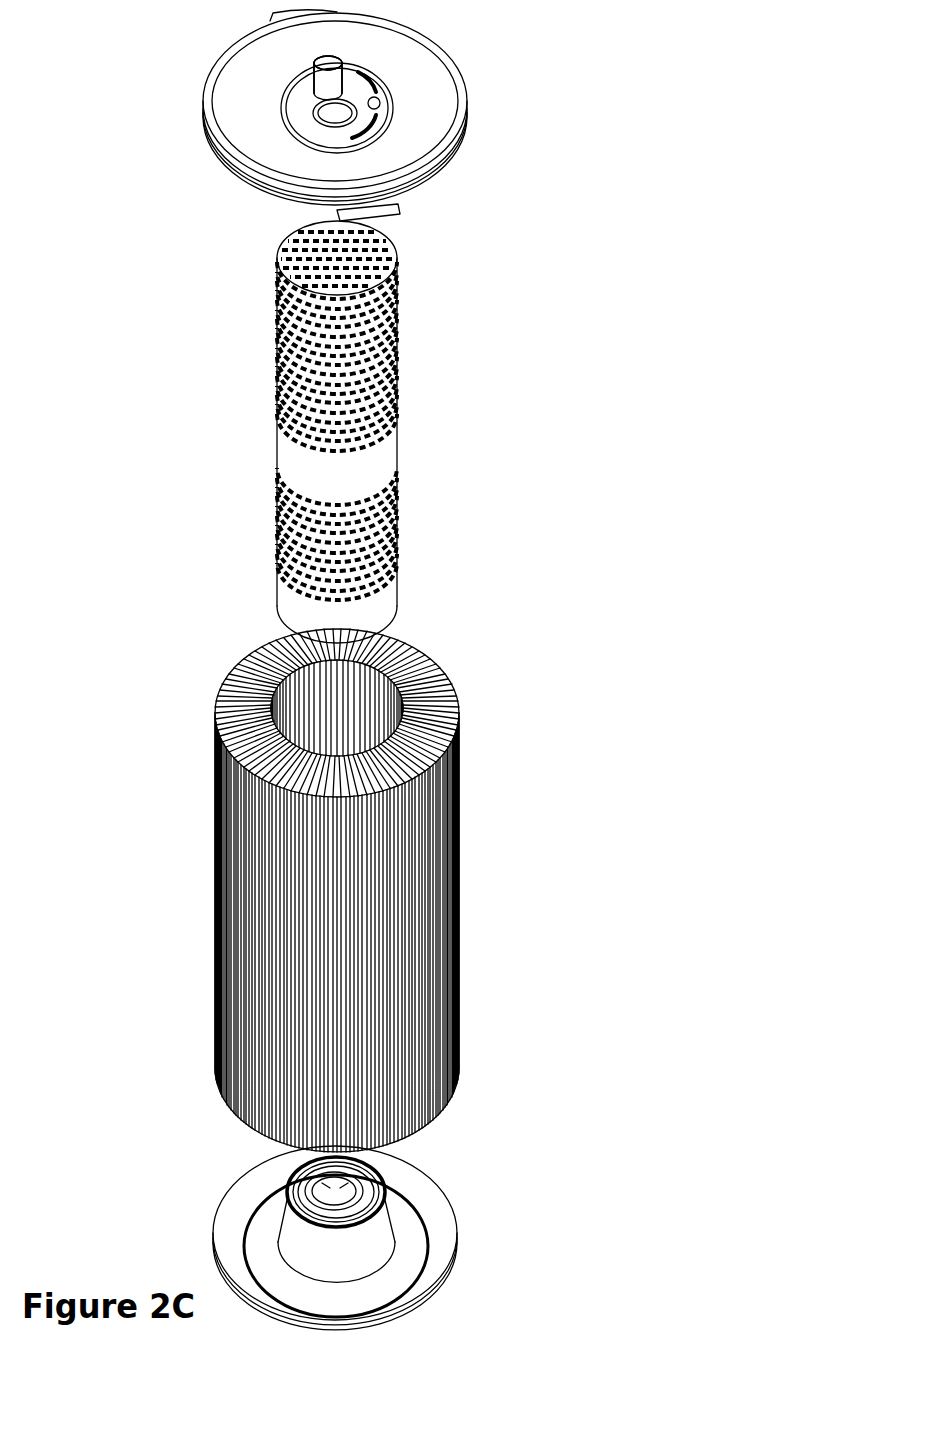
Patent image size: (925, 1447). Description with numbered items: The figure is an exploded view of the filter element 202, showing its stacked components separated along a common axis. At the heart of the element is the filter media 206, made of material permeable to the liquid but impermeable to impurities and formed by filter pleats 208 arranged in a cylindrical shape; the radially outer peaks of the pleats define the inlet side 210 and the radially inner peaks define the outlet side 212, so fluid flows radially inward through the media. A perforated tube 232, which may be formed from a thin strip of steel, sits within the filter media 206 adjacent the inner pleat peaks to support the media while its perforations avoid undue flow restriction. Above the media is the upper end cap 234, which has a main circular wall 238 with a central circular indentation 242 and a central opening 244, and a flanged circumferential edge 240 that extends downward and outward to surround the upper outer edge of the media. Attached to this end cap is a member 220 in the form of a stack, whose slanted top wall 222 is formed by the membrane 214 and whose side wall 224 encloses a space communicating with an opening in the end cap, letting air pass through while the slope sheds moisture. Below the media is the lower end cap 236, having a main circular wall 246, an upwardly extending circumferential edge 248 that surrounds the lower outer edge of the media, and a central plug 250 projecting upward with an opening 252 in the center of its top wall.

The filter element 202 is at (417, 432).
The filter media 206 is at (327, 872).
The filter pleats 208 is at (443, 664).
The inlet side 210 is at (247, 900).
The outlet side 212 is at (297, 697).
The membrane 214 is at (318, 63).
The slanted top wall 222 is at (318, 63).
The member (stack) 220 is at (303, 70).
The side wall 224 is at (326, 83).
The perforated tube 232 is at (384, 447).
The upper end cap 234 is at (455, 77).
The lower end cap 236 is at (342, 1249).
The main circular wall 238 is at (421, 125).
The flanged circumferential edge 240 is at (432, 173).
The central circular indentation 242 is at (361, 84).
The opening 244 is at (340, 117).
The main circular wall 246 is at (413, 1290).
The circumferential edge 248 is at (387, 1317).
The central plug 250 is at (380, 1218).
The opening 252 is at (330, 1191).